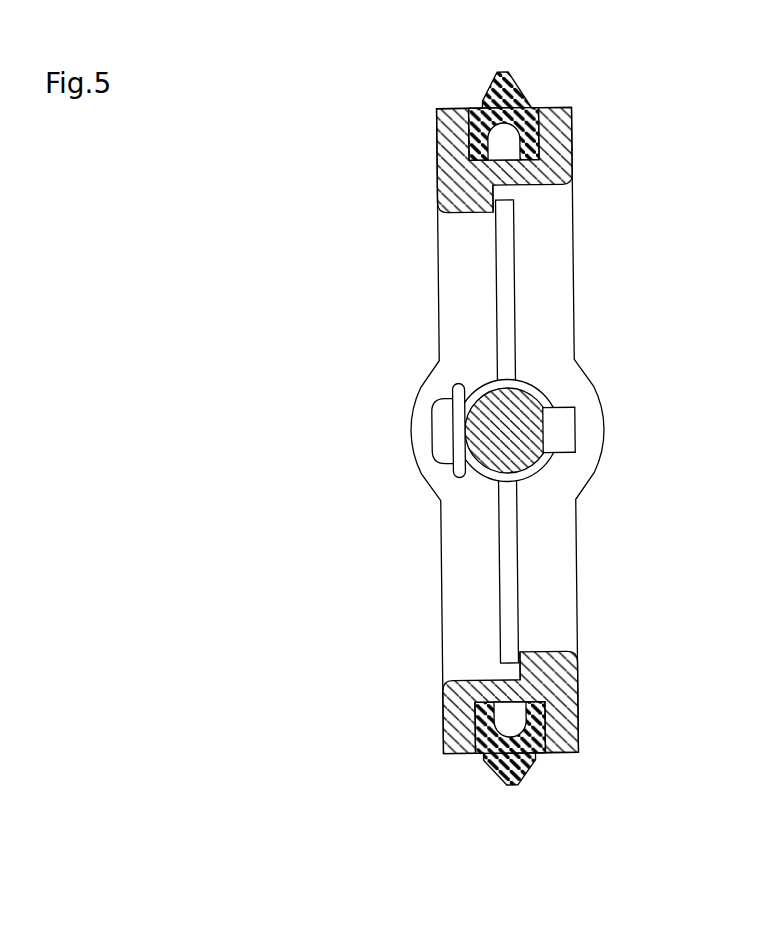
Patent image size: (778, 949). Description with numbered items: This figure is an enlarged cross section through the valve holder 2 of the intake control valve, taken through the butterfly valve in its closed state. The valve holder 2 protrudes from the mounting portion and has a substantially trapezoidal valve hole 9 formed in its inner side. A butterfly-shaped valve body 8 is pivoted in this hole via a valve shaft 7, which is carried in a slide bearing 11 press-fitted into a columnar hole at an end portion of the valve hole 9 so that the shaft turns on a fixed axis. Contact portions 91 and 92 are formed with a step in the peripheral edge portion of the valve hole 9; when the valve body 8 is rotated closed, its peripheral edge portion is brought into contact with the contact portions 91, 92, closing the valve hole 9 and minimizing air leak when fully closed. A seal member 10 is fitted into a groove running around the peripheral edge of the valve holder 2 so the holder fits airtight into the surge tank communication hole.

The valve holder 2 is at (575, 268).
The valve shaft 7 is at (525, 450).
The valve body 8 is at (522, 318).
The valve hole 9 is at (478, 297).
The seal member 10 is at (509, 90).
The slide bearing 11 is at (547, 392).
The contact portion 91 is at (498, 190).
The contact portion 92 is at (517, 676).